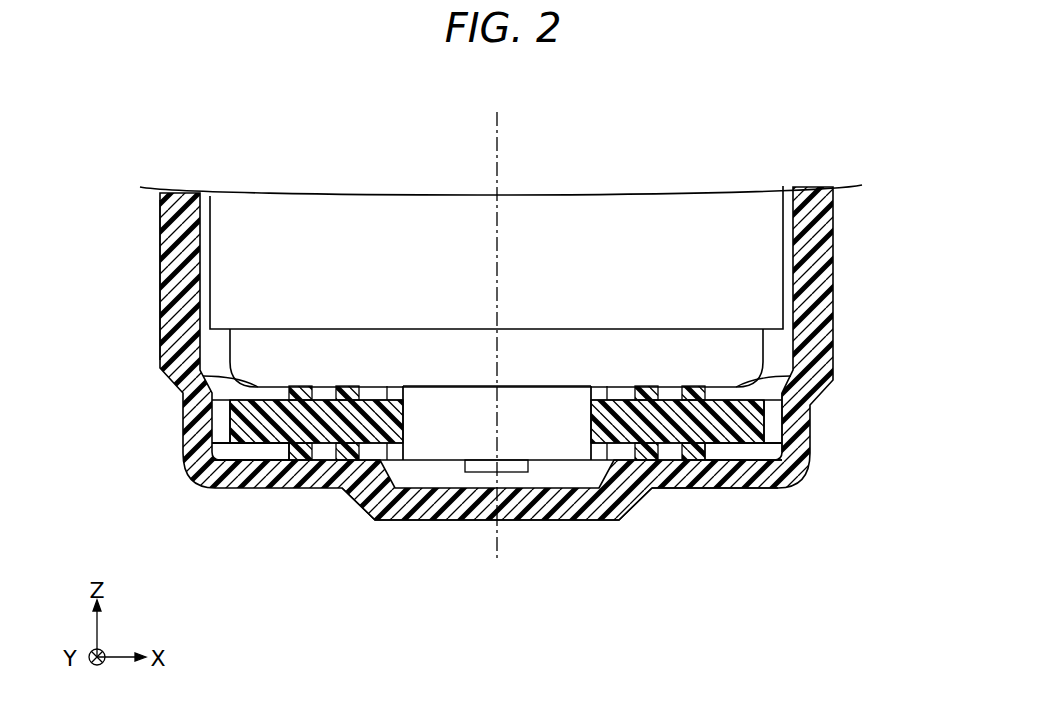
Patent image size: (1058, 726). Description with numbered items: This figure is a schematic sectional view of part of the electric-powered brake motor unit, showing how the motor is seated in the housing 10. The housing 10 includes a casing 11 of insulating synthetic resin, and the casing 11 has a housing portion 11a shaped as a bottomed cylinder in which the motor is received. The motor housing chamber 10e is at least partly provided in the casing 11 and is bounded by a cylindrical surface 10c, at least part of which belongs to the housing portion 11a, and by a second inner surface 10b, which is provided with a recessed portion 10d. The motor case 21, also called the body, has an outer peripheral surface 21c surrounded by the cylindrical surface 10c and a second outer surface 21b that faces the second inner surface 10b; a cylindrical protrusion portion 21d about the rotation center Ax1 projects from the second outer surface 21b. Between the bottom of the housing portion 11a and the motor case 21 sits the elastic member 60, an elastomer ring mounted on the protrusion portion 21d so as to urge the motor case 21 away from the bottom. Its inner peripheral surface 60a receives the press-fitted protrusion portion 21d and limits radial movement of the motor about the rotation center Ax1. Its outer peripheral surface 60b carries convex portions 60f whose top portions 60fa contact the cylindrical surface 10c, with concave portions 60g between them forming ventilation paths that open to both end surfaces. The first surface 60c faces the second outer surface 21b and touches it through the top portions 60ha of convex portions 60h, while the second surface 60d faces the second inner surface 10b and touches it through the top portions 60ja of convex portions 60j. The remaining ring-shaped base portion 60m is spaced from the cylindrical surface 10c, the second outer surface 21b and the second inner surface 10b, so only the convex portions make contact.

The housing 10 is at (478, 401).
The casing 11 is at (160, 228).
The housing portion 11a is at (160, 256).
The motor housing chamber 10e is at (775, 343).
The cylindrical surface 10c is at (776, 446).
The recessed portion 10d is at (568, 474).
The second inner surface 10b is at (742, 460).
The motor case 21 is at (580, 378).
The outer peripheral surface 21c is at (760, 238).
The second outer surface 21b is at (262, 449).
The protrusion portion 21d is at (549, 432).
The elastic member 60 is at (236, 449).
The first surface 60c is at (205, 379).
The convex portions 60f is at (407, 421).
The top portions 60fa is at (213, 416).
The outer peripheral surface 60b is at (213, 450).
The concave portion 60g is at (772, 417).
The convex portions 60h is at (495, 245).
The top portions 60ha is at (350, 398).
The convex portions 60j is at (497, 515).
The top portions 60ja is at (347, 460).
The inner peripheral surface 60a is at (403, 420).
The second surface 60d is at (278, 460).
The base portion 60m is at (722, 460).
The rotation center Ax1 is at (503, 143).